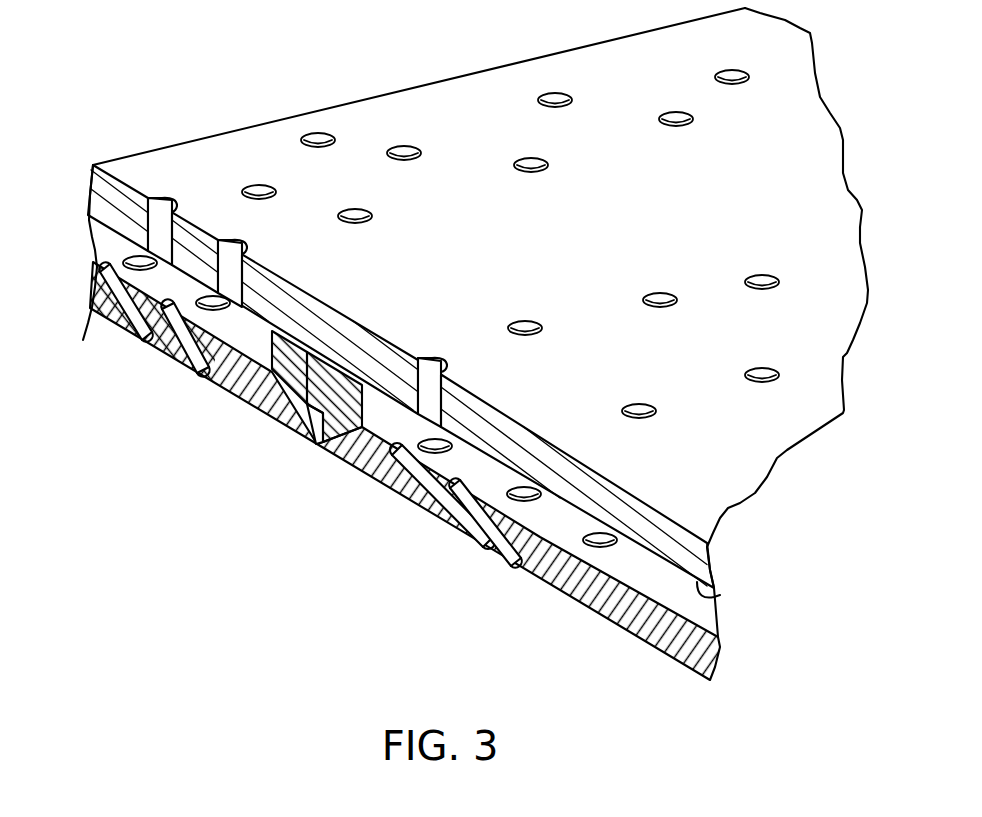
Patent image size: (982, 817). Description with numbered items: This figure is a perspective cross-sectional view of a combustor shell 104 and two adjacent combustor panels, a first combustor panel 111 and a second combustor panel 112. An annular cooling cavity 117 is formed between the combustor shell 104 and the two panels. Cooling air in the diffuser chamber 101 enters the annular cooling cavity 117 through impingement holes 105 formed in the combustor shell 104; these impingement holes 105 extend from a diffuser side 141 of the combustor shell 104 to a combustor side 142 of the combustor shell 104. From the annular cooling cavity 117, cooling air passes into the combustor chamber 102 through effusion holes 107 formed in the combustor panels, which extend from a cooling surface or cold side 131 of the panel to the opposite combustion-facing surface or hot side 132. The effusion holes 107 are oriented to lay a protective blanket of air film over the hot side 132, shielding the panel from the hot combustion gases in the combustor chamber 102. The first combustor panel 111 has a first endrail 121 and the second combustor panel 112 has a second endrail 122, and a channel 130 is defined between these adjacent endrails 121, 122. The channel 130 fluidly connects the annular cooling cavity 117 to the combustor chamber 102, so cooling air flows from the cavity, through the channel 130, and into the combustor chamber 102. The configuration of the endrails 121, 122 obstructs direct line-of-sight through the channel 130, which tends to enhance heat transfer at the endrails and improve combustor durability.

The diffuser chamber 101 is at (478, 312).
The combustor chamber 102 is at (460, 495).
The combustor shell 104 is at (698, 553).
The impingement holes 105 is at (520, 326).
The effusion holes 107 is at (147, 341).
The first combustor panel 111 is at (225, 430).
The second combustor panel 112 is at (354, 505).
The annular cooling cavity 117 is at (96, 242).
The first endrail 121 is at (289, 363).
The second endrail 122 is at (341, 405).
The channel 130 is at (304, 414).
The cold side 131 is at (721, 622).
The hot side 132 is at (682, 662).
The diffuser side 141 is at (721, 493).
The combustor side 142 is at (699, 589).